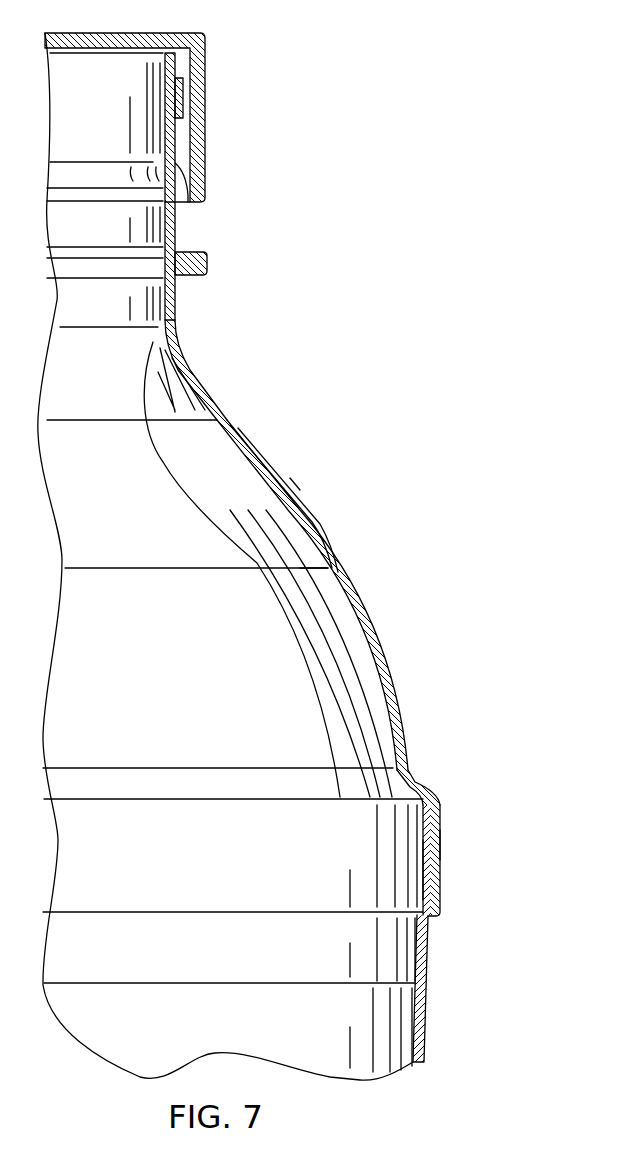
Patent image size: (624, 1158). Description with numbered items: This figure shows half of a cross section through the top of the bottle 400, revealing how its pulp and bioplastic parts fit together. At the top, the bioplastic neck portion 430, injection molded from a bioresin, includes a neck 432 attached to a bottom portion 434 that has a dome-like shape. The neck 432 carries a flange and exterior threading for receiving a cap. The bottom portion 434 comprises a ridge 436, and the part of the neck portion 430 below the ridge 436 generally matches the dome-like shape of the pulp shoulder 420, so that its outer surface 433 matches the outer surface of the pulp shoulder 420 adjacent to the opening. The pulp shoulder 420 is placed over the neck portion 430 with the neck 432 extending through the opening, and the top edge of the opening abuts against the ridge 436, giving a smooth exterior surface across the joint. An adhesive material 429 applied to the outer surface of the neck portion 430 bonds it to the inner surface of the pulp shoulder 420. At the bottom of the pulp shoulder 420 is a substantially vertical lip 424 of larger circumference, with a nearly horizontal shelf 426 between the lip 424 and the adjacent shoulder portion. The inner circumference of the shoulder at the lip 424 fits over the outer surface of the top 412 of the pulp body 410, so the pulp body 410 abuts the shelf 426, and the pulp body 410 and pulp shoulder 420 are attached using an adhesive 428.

The bottle 400 is at (402, 316).
The pulp body 410 is at (430, 1012).
The top of the pulp body 412 is at (420, 875).
The pulp shoulder 420 is at (372, 620).
The lip 424 is at (443, 882).
The shelf 426 is at (420, 781).
The adhesive 428 is at (443, 843).
The adhesive material 429 is at (293, 482).
The bioplastic neck portion 430 is at (193, 362).
The neck 432 is at (178, 236).
The outer surface of the bioplastic neck portion 433 is at (318, 572).
The bottom portion 434 is at (163, 464).
The ridge 436 is at (232, 430).